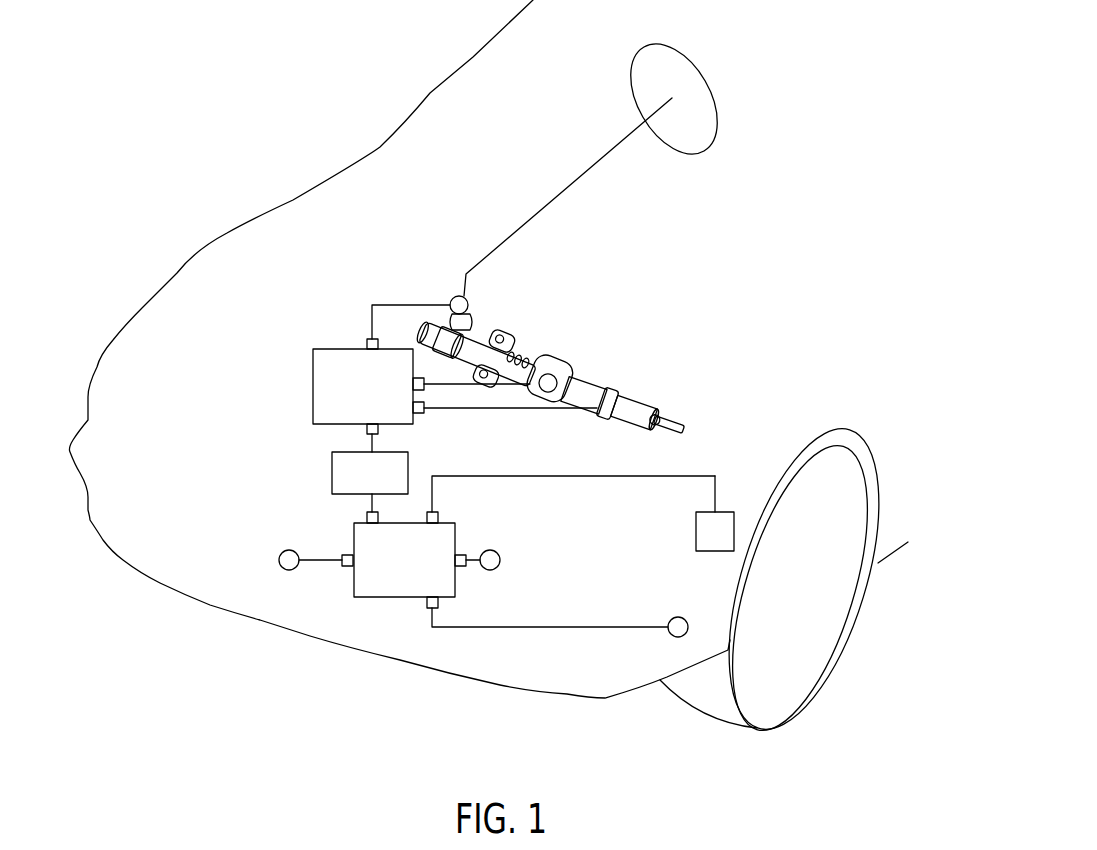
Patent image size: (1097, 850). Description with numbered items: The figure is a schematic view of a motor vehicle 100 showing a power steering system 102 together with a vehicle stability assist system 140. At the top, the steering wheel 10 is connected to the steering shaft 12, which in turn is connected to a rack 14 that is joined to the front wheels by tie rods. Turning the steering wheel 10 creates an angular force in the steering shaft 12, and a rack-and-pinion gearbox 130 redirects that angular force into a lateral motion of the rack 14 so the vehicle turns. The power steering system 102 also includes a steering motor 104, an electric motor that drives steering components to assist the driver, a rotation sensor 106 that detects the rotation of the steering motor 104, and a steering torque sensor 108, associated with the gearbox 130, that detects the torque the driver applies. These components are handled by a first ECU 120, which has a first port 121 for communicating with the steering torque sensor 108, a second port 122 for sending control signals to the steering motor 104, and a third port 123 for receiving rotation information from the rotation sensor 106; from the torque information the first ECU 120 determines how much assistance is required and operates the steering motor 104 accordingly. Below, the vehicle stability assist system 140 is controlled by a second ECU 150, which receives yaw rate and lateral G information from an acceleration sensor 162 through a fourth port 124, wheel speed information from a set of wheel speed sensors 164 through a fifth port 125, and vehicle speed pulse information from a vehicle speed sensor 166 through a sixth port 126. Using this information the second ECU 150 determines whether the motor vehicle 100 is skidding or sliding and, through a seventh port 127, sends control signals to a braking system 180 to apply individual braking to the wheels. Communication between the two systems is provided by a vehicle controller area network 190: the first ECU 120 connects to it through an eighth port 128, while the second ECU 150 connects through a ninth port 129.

The steering wheel 10 is at (693, 63).
The steering shaft 12 is at (595, 165).
The rack 14 is at (527, 352).
The motor vehicle 100 is at (212, 190).
The power steering system 102 is at (553, 293).
The steering motor 104 is at (602, 370).
The rotation sensor 106 is at (587, 380).
The steering torque sensor 108 is at (452, 298).
The first ECU 120 is at (313, 352).
The first port 121 is at (367, 338).
The second port 122 is at (421, 415).
The third port 123 is at (424, 380).
The fourth port 124 is at (347, 552).
The fifth port 125 is at (430, 612).
The sixth port 126 is at (462, 555).
The seventh port 127 is at (437, 515).
The eighth port 128 is at (367, 430).
The ninth port 129 is at (367, 518).
The gearbox 130 is at (478, 327).
The vehicle stability assist system 140 is at (308, 610).
The second ECU 150 is at (380, 598).
The acceleration sensor 162 is at (279, 562).
The set of wheel speed sensors 164 is at (676, 617).
The vehicle speed sensor 166 is at (499, 567).
The braking system 180 is at (732, 512).
The vehicle controller area network 190 is at (332, 470).